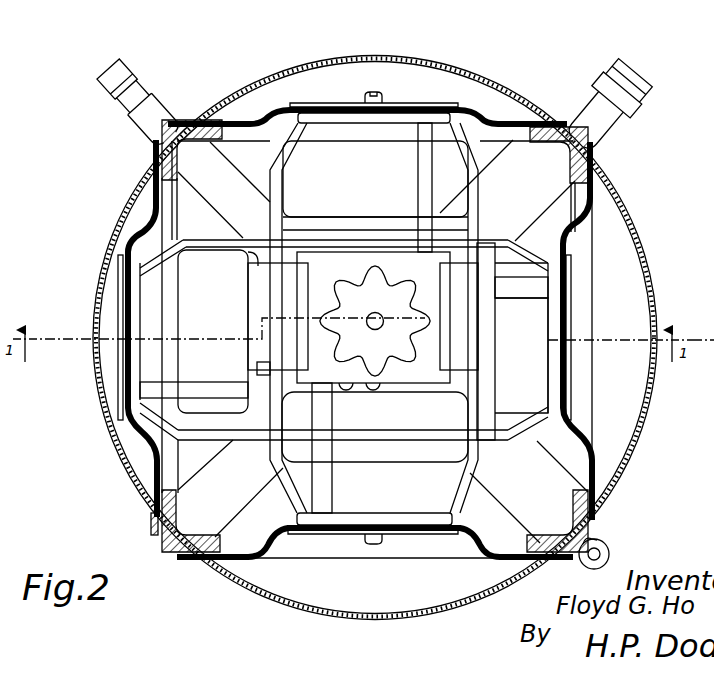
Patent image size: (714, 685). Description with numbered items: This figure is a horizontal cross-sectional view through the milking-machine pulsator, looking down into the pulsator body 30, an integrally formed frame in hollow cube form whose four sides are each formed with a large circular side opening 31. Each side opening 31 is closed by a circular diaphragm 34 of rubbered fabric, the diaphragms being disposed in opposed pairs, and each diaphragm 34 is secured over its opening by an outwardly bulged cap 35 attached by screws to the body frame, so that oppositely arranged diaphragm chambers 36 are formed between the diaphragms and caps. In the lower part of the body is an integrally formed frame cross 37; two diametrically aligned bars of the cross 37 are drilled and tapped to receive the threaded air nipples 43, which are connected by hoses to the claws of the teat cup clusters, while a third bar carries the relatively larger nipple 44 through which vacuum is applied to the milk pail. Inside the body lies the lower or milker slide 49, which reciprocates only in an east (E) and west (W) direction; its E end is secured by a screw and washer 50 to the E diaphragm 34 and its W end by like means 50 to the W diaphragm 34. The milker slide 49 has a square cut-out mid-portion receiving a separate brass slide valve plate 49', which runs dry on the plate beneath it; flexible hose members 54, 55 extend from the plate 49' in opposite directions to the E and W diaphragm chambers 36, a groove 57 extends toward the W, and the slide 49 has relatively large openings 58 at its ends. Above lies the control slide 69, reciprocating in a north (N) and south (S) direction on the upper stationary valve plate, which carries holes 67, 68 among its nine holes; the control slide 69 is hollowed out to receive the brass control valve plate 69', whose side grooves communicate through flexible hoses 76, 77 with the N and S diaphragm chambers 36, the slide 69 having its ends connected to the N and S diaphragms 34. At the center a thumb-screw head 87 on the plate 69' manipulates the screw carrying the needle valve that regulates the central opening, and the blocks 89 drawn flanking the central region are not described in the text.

The pulsator body 30 is at (598, 157).
The side openings 31 is at (518, 134).
The circular diaphragm 34 is at (148, 228).
The outwardly bulged caps 35 is at (466, 75).
The diaphragm chambers 36 is at (467, 86).
The frame cross 37 is at (237, 505).
The threaded nipples 43 is at (152, 98).
The larger nipple 44 is at (634, 106).
The lower or milker slide 49 is at (344, 241).
The slide valve plate 49' is at (236, 277).
The screw and washer 50 is at (125, 352).
The flexible hose member 54 is at (515, 286).
The flexible hose member 55 is at (237, 385).
The groove 57 is at (258, 364).
The openings 58 is at (363, 331).
The hole 67 is at (350, 392).
The hole 68 is at (380, 392).
The control slide 69 is at (375, 179).
The control valve plate 69' is at (375, 223).
The flexible hose 76 is at (424, 169).
The flexible hose 77 is at (333, 476).
The thumb-screw head 87 is at (385, 355).
The bearing block 89 is at (363, 316).
The north direction N is at (372, 32).
The south direction S is at (377, 654).
The west direction W is at (43, 327).
The east direction E is at (685, 334).